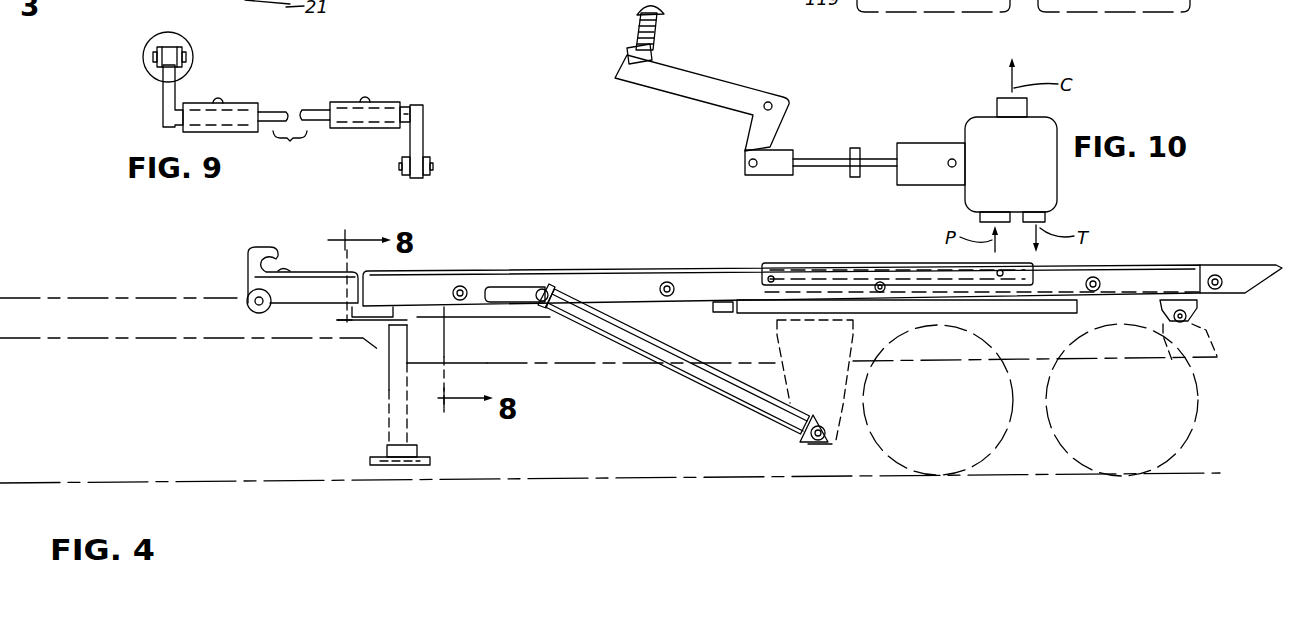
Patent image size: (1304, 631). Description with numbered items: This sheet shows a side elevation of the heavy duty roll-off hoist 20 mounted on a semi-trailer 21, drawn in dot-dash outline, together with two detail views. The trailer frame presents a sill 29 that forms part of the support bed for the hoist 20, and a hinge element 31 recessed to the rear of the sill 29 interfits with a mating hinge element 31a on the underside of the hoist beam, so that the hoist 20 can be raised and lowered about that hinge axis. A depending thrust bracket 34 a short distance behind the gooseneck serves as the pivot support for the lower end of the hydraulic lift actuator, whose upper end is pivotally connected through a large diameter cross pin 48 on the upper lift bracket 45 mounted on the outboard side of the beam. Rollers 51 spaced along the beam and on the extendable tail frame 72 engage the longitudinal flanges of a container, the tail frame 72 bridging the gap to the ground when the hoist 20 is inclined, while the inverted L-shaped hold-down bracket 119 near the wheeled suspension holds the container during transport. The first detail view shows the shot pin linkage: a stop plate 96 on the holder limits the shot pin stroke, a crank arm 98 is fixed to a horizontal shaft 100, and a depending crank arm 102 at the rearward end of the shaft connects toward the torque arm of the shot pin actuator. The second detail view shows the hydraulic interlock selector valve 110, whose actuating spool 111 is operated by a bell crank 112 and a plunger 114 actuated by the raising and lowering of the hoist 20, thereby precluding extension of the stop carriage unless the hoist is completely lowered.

In FIG. 4, the roll-off hoist 20 is at (683, 269).
In FIG. 4, the semi-trailer 21 is at (552, 365).
In FIG. 4, the sill 29 is at (600, 291).
In FIG. 4, the hinge element 31 is at (1202, 327).
In FIG. 4, the hinge element 31a is at (1199, 312).
In FIG. 4, the thrust bracket 34 is at (845, 420).
In FIG. 4, the upper lift bracket 45 is at (511, 286).
In FIG. 4, the cross pin 48 is at (547, 289).
In FIG. 4, the roller 51 is at (464, 286).
In FIG. 4, the extendable tail frame 72 is at (1238, 272).
In FIG. 9, the stop plate 96 is at (150, 57).
In FIG. 9, the crank arm 98 is at (165, 95).
In FIG. 9, the horizontal shaft 100 is at (270, 112).
In FIG. 9, the depending crank arm 102 is at (420, 130).
In FIG. 10, the hydraulic interlock selector valve 110 is at (1058, 183).
In FIG. 10, the actuating spool 111 is at (873, 156).
In FIG. 10, the bell crank 112 is at (680, 85).
In FIG. 10, the plunger 114 is at (633, 28).
In FIG. 4, the hold-down bracket 119 is at (796, 262).